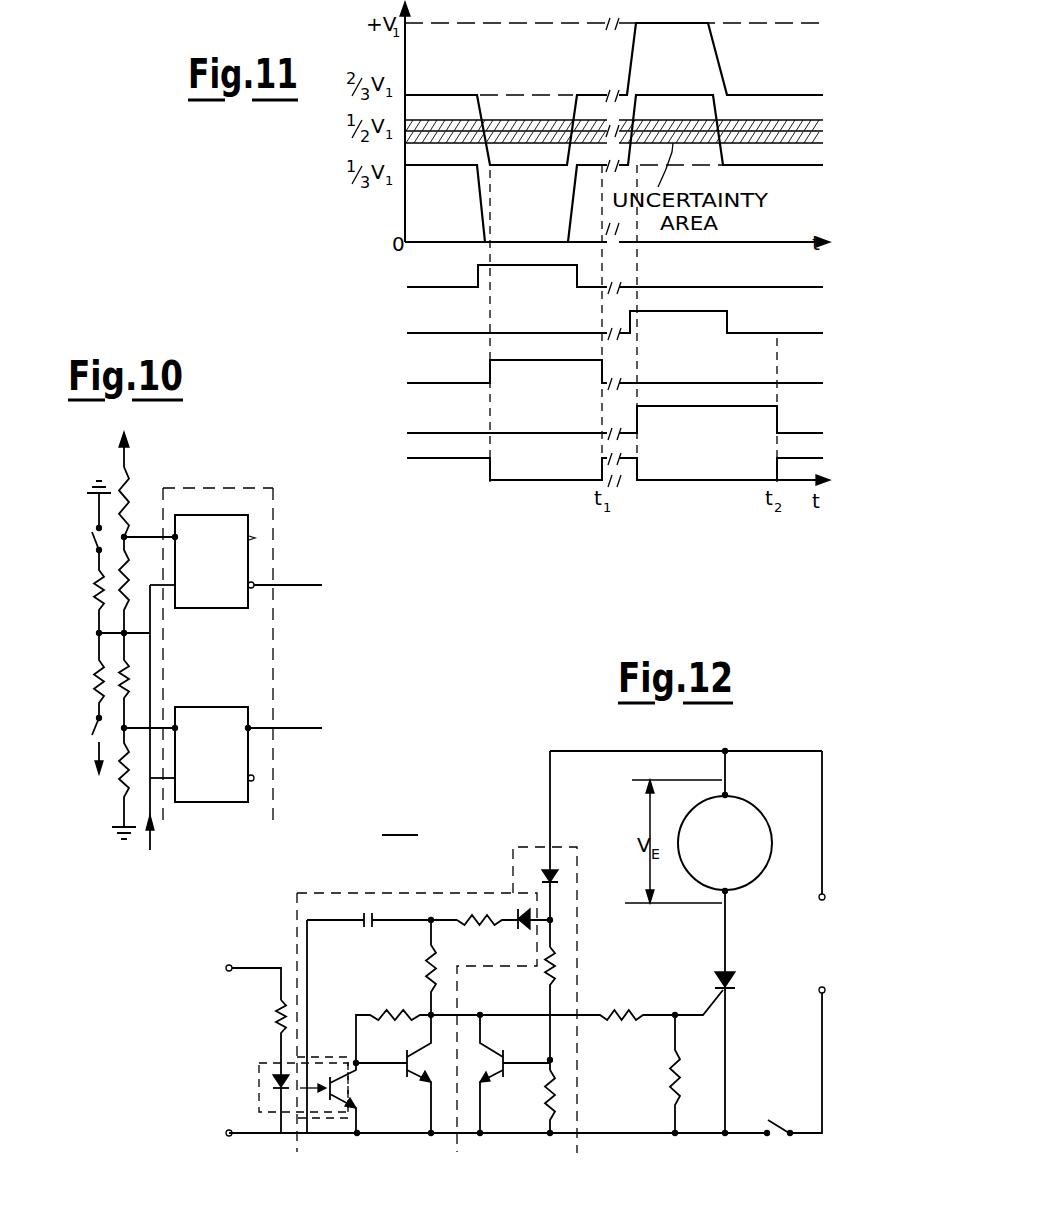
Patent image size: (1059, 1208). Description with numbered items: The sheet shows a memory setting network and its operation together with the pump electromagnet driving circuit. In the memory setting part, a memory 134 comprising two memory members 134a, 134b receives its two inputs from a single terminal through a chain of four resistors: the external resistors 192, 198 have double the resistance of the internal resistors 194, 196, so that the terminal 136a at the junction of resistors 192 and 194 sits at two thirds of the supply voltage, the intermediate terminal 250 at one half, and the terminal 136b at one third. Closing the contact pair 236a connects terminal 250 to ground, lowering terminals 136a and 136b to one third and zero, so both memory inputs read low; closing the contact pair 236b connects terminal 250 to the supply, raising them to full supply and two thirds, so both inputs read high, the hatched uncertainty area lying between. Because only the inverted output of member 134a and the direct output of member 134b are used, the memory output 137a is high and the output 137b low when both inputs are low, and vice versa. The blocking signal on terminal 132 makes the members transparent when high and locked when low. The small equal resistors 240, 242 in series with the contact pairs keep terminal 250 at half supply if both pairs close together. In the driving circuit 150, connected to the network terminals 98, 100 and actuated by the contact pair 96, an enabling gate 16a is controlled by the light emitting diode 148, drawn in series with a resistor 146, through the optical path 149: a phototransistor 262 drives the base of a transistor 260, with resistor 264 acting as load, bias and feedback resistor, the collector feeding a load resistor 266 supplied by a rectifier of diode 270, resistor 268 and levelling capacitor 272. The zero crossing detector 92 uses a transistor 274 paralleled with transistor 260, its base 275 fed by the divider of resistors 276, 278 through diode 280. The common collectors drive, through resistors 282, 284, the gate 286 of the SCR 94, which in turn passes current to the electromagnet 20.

In FIG. 12, the pump electromagnet 20 is at (733, 803).
In FIG. 12, the zero crossing detector 92 is at (578, 953).
In FIG. 12, the controlled rectifier (SCR) 94 is at (746, 980).
In FIG. 12, the contact pair 96 is at (776, 1122).
In FIG. 12, the network terminal 98 is at (818, 896).
In FIG. 12, the network terminal 100 is at (818, 986).
In FIG. 11, the memory blocking signal terminal 132 is at (428, 459).
In FIG. 10, the memory blocking signal terminal 132 is at (152, 848).
In FIG. 10, the memory 134 is at (258, 490).
In FIG. 10, the memory member 134a is at (202, 561).
In FIG. 10, the memory member 134b is at (202, 754).
In FIG. 11, the memory input terminal 136a is at (447, 94).
In FIG. 10, the memory input terminal 136a is at (145, 537).
In FIG. 11, the memory input terminal 136b is at (440, 168).
In FIG. 10, the memory input terminal 136b is at (152, 728).
In FIG. 11, the memory output 137a is at (430, 383).
In FIG. 10, the memory output 137a is at (314, 572).
In FIG. 11, the memory output 137b is at (430, 431).
In FIG. 10, the memory output 137b is at (305, 726).
In FIG. 12, the resistor 146 is at (279, 1022).
In FIG. 12, the light emitting diode 148 is at (268, 1085).
In FIG. 12, the optical path 149 is at (299, 1093).
In FIG. 12, the driving circuit 150 is at (379, 835).
In FIG. 12, the enabling gate 16a is at (296, 914).
In FIG. 10, the external resistor 192 is at (161, 657).
In FIG. 10, the internal resistor 194 is at (125, 586).
In FIG. 10, the internal resistor 196 is at (130, 672).
In FIG. 10, the external resistor 198 is at (136, 783).
In FIG. 11, the contact pair 236a is at (428, 287).
In FIG. 10, the contact pair 236a is at (92, 543).
In FIG. 11, the contact pair 236b is at (428, 333).
In FIG. 10, the contact pair 236b is at (93, 722).
In FIG. 10, the resistor 240 is at (96, 578).
In FIG. 10, the resistor 242 is at (96, 680).
In FIG. 11, the intermediate terminal 250 is at (460, 119).
In FIG. 10, the intermediate terminal 250 is at (150, 633).
In FIG. 12, the transistor 260 is at (392, 1091).
In FIG. 12, the phototransistor 262 is at (352, 1089).
In FIG. 12, the resistor 264 is at (393, 1012).
In FIG. 12, the load resistor 266 is at (425, 962).
In FIG. 12, the resistor 268 is at (465, 915).
In FIG. 12, the diode 270 is at (517, 921).
In FIG. 12, the levelling capacitor 272 is at (366, 913).
In FIG. 12, the transistor 274 is at (515, 1074).
In FIG. 12, the base 275 is at (521, 1058).
In FIG. 12, the resistor 276 is at (558, 1097).
In FIG. 12, the resistor 278 is at (548, 984).
In FIG. 12, the diode 280 is at (545, 868).
In FIG. 12, the resistor 282 is at (615, 1010).
In FIG. 12, the resistor 284 is at (672, 1086).
In FIG. 12, the gate 286 is at (694, 1010).